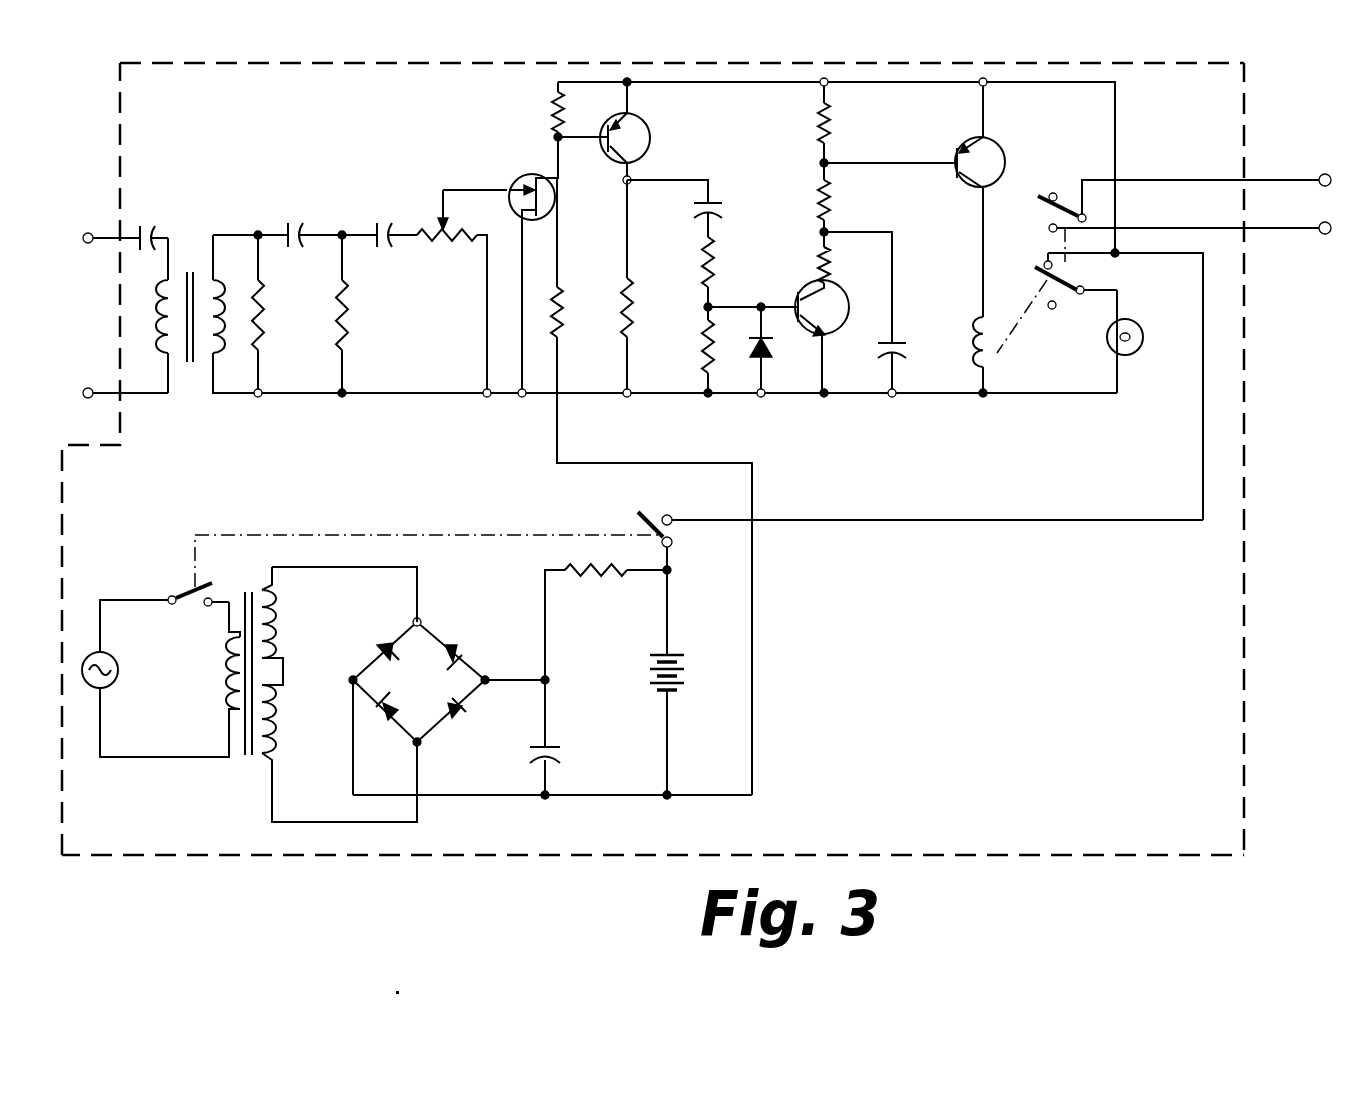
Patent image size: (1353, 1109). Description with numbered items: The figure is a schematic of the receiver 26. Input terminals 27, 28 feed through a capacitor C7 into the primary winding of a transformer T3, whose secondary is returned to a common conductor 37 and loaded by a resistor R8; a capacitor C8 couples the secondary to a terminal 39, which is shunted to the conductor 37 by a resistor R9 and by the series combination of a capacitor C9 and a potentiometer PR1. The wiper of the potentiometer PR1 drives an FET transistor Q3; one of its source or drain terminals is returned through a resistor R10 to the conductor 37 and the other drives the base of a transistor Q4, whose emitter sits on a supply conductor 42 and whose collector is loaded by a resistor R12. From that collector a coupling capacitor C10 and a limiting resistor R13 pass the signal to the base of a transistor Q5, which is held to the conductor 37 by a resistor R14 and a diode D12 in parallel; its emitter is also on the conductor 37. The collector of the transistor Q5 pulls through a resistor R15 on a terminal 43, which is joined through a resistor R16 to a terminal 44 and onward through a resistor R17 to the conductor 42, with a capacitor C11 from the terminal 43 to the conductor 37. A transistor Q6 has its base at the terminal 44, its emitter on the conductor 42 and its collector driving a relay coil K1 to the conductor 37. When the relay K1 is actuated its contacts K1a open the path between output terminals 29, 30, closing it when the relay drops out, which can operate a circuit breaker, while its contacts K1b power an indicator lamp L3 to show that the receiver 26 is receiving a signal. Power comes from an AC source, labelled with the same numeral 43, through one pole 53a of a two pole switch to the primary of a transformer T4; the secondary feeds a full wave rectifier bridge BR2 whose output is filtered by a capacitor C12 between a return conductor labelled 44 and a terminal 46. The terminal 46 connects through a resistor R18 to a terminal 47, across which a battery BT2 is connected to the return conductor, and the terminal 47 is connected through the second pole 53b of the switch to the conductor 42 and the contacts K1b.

The receiver 26 is at (1244, 453).
The input terminal 27 is at (90, 233).
The input terminal 28 is at (88, 388).
The output terminal 29 is at (1337, 160).
The output terminal 30 is at (1331, 230).
The conductor 37 is at (383, 395).
The terminal 39 is at (345, 230).
The conductor 42 is at (732, 82).
The terminal 43 is at (820, 232).
The terminal 44 is at (820, 163).
The terminal 46 is at (549, 678).
The terminal 47 is at (692, 570).
The first pole of two pole switch 53a is at (197, 605).
The second pole of two pole switch 53b is at (672, 503).
The capacitor C7 is at (163, 232).
The capacitor C8 is at (300, 248).
The capacitor C9 is at (405, 215).
The coupling capacitor C10 is at (722, 211).
The capacitor C11 is at (920, 327).
The capacitor C12 is at (580, 740).
The transformer T3 is at (194, 252).
The transformer T4 is at (258, 578).
The resistor R8 is at (264, 318).
The resistor R9 is at (348, 318).
The resistor R10 is at (563, 313).
The resistor R12 is at (633, 313).
The limiting resistor R13 is at (714, 283).
The resistor R14 is at (700, 337).
The resistor R15 is at (845, 250).
The resistor R16 is at (830, 207).
The resistor R17 is at (830, 130).
The resistor R18 is at (580, 577).
The potentiometer PR1 is at (454, 293).
The FET transistor Q3 is at (535, 158).
The transistor Q4 is at (647, 133).
The transistor Q5 is at (848, 325).
The transistor Q6 is at (1002, 152).
The diode D12 is at (773, 348).
The relay coil K1 is at (990, 345).
The set of contacts K1a is at (1050, 217).
The set of contacts K1b is at (1040, 266).
The indicator lamp L3 is at (1143, 340).
The battery BT2 is at (680, 678).
The full wave rectifier bridge BR2 is at (419, 706).